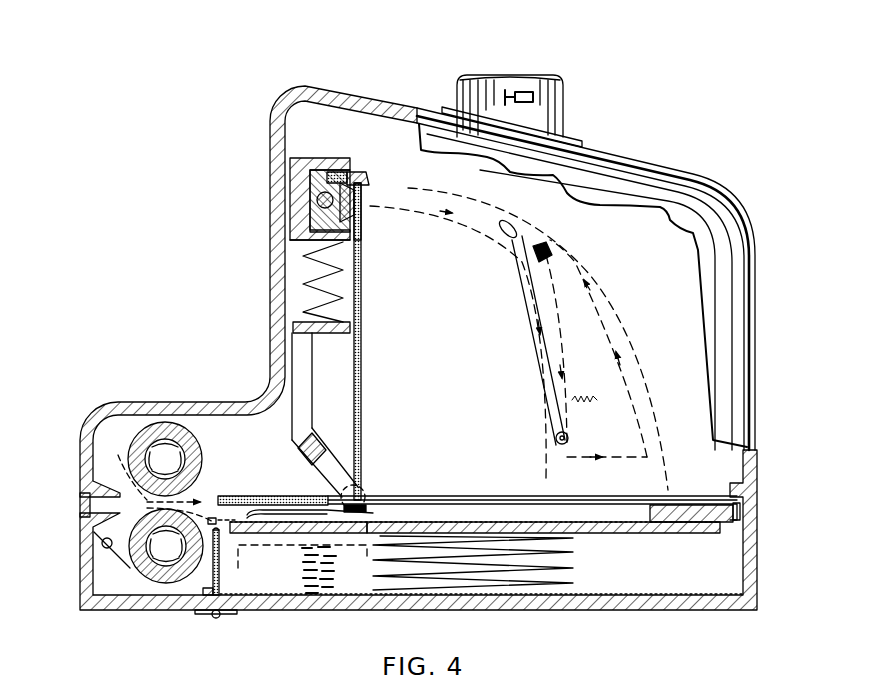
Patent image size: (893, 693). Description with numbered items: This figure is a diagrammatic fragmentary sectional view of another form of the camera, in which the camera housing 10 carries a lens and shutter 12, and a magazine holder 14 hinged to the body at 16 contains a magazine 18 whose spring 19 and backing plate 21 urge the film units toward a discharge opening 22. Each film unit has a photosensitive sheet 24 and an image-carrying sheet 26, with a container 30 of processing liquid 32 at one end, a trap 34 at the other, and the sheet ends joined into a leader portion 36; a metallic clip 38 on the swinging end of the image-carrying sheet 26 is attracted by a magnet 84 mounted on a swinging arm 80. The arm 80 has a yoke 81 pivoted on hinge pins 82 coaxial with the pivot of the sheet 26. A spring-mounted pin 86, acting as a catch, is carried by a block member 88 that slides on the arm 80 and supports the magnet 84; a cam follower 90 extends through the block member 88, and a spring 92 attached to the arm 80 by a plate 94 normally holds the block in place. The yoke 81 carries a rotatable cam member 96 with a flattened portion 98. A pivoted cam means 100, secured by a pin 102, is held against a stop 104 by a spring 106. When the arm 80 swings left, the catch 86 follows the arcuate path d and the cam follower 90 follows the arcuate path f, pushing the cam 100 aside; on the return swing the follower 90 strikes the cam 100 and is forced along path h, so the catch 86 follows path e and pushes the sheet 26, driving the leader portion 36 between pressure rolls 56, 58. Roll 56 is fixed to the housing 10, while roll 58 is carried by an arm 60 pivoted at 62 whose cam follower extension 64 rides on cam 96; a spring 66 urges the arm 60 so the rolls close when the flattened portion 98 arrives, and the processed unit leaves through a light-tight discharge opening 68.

The camera housing 10 is at (662, 170).
The lens and shutter 12 is at (565, 106).
The magazine holder 14 is at (752, 562).
The hinge 16 is at (218, 619).
The magazine 18 is at (665, 594).
The spring 19 is at (568, 585).
The backing plate 21 is at (618, 530).
The discharge opening 22 is at (208, 512).
The photosensitive sheet 24 is at (490, 521).
The image-carrying sheet 26 is at (364, 350).
The container 30 is at (344, 524).
The processing liquid 32 is at (312, 510).
The trap 34 is at (707, 522).
The leader portion 36 is at (130, 470).
The metallic clip 38 is at (525, 334).
The pressure roll 56 is at (170, 432).
The pressure roll 58 is at (168, 583).
The arm 60 is at (118, 558).
The pivot 62 is at (101, 543).
The cam follower extension 64 is at (281, 538).
The spring 66 is at (347, 580).
The light-tight discharge opening 68 is at (82, 500).
The swinging arm 80 is at (293, 424).
The yoke 81 is at (315, 465).
The hinge pin 82 is at (366, 503).
The magnet 84 is at (360, 222).
The spring-mounted pin 86 is at (361, 172).
The block member 88 is at (322, 207).
The cam follower 90 is at (362, 218).
The spring 92 is at (344, 288).
The plate 94 is at (325, 333).
The cam member 96 is at (357, 450).
The flattened portion 98 is at (360, 495).
The cam means 100 is at (550, 315).
The pin 102 is at (556, 438).
The stop 104 is at (550, 250).
The spring 106 is at (583, 403).
The arcuate path d is at (651, 335).
The path e is at (562, 353).
The arcuate path f is at (647, 427).
The path h is at (545, 373).